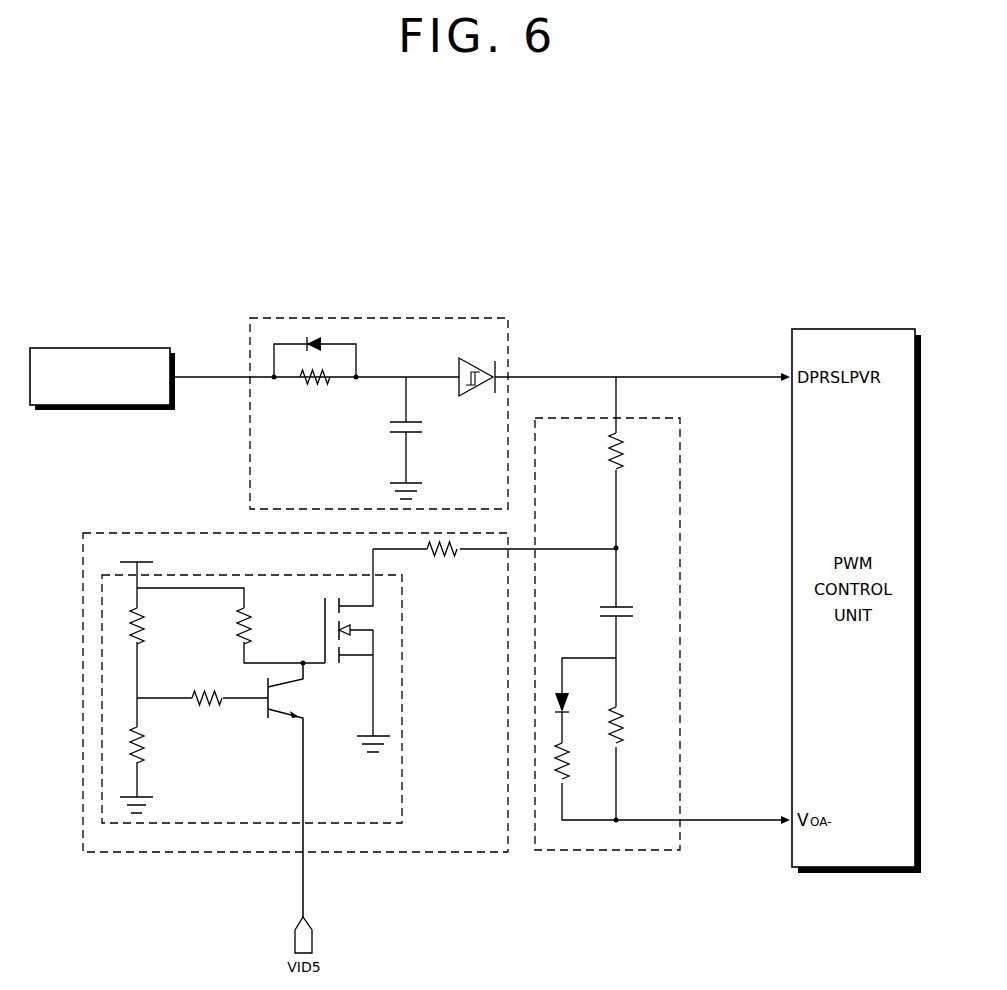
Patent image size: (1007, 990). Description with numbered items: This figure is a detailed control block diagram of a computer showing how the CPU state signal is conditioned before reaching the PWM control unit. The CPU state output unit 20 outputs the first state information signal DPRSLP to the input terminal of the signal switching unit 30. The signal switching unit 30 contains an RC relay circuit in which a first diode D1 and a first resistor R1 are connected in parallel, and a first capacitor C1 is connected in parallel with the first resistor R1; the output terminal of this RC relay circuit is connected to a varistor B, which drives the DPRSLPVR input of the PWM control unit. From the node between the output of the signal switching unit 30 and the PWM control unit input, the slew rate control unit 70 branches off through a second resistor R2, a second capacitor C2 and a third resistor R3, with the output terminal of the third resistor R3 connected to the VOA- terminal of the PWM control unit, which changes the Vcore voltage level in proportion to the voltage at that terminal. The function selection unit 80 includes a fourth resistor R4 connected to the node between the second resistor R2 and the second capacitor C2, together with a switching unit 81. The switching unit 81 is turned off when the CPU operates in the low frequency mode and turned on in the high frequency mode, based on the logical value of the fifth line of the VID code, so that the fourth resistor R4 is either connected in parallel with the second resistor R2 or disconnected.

The CPU state output unit 20 is at (103, 412).
The signal switching unit 30 is at (379, 378).
The slew rate control unit 70 is at (662, 645).
The function selection unit 80 is at (349, 725).
The switching unit 81 is at (200, 825).
The varistor B is at (478, 397).
The first diode D1 is at (315, 349).
The first resistor R1 is at (315, 389).
The first capacitor C1 is at (393, 438).
The second resistor R2 is at (631, 451).
The second capacitor C2 is at (629, 614).
The third resistor R3 is at (631, 725).
The fourth resistor R4 is at (494, 563).